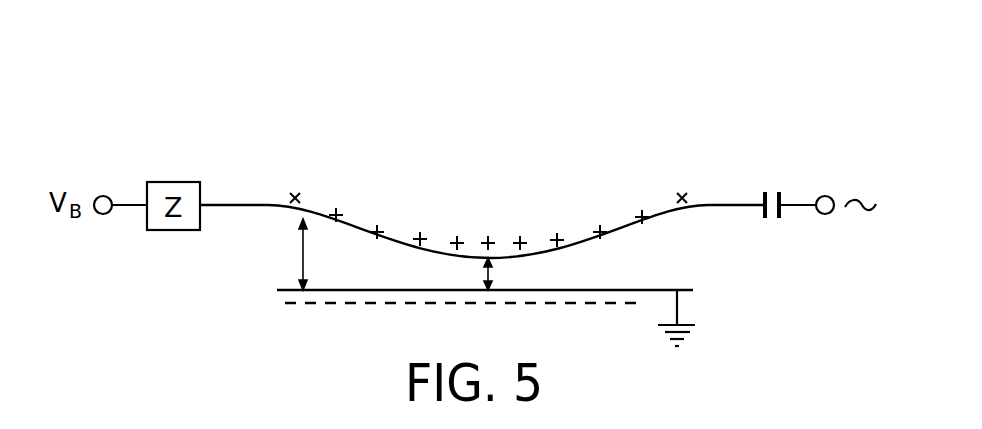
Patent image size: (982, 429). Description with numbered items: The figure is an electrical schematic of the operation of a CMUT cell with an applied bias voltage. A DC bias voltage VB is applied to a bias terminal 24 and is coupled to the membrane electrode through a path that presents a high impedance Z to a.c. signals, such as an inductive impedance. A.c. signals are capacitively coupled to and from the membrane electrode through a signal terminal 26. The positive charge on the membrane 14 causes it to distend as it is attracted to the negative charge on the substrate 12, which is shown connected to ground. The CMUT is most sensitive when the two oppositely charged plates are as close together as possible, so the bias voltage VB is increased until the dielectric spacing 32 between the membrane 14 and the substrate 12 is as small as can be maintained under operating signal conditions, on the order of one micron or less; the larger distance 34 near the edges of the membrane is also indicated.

The substrate 12 is at (655, 290).
The membrane 14 is at (668, 212).
The bias terminal 24 is at (103, 196).
The signal terminal 26 is at (826, 196).
The dielectric spacing 32 is at (485, 271).
The maximum gap distance 34 is at (301, 251).